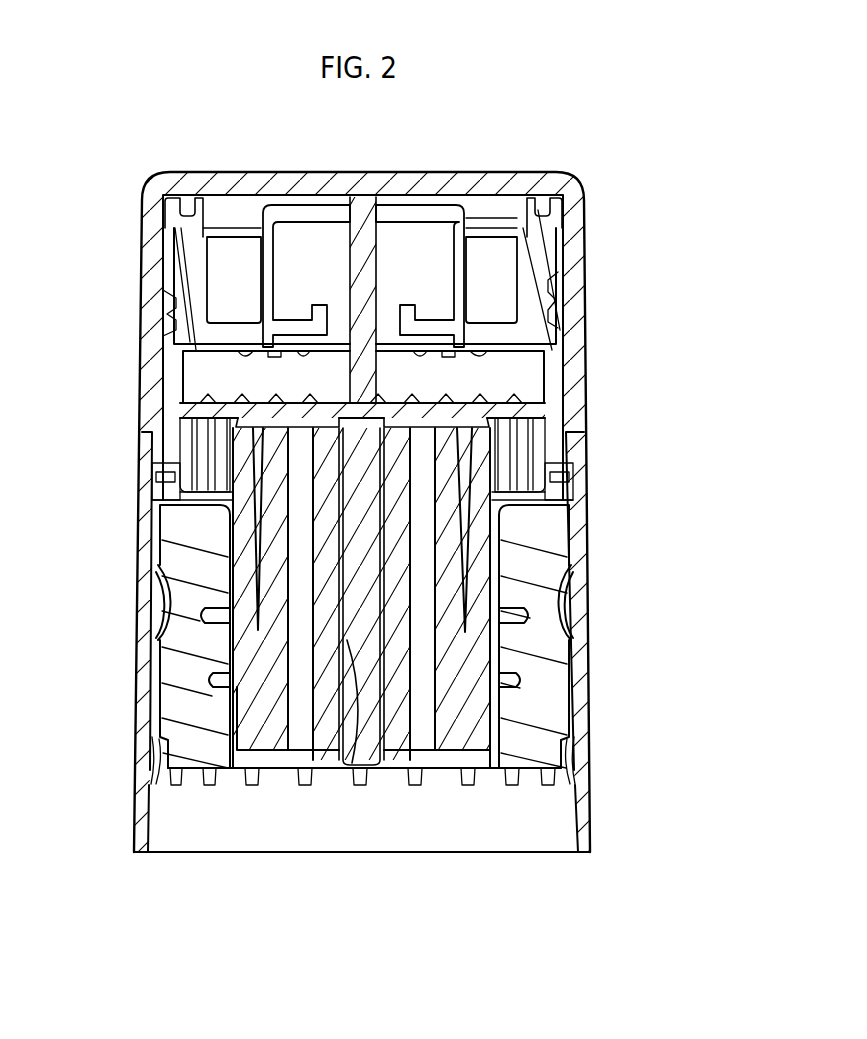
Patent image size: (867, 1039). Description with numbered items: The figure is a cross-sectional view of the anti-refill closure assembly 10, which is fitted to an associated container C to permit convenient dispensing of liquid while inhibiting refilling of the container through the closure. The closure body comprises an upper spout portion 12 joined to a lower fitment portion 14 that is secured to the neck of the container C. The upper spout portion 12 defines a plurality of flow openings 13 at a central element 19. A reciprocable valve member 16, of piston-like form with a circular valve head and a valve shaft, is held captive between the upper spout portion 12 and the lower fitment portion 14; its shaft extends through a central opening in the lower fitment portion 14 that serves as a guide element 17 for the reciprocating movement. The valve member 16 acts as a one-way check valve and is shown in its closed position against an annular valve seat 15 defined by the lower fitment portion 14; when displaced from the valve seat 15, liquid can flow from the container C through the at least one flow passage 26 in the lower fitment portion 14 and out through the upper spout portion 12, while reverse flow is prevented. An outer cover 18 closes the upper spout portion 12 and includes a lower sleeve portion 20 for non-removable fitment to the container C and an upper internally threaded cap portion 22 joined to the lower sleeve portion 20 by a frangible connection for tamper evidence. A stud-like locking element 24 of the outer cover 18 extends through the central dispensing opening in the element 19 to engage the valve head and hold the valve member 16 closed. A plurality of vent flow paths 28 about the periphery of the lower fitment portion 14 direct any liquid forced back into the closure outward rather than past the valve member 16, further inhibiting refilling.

The anti-refill closure assembly 10 is at (612, 158).
The upper spout portion 12 is at (166, 367).
The flow openings 13 is at (222, 292).
The lower fitment portion 14 is at (500, 548).
The annular valve seat 15 is at (248, 408).
The reciprocable valve member 16 is at (472, 397).
The guide element 17 is at (357, 640).
The outer cover 18 is at (590, 232).
The central element 19 is at (258, 262).
The lower sleeve portion 20 is at (150, 500).
The upper internally threaded cap portion 22 is at (150, 197).
The stud-like locking element 24 is at (385, 262).
The flow passage 26 is at (290, 737).
The vent flow paths 28 is at (558, 473).
The container C is at (558, 740).